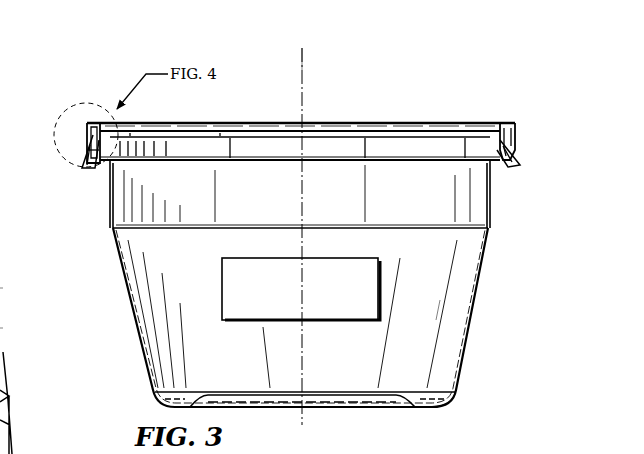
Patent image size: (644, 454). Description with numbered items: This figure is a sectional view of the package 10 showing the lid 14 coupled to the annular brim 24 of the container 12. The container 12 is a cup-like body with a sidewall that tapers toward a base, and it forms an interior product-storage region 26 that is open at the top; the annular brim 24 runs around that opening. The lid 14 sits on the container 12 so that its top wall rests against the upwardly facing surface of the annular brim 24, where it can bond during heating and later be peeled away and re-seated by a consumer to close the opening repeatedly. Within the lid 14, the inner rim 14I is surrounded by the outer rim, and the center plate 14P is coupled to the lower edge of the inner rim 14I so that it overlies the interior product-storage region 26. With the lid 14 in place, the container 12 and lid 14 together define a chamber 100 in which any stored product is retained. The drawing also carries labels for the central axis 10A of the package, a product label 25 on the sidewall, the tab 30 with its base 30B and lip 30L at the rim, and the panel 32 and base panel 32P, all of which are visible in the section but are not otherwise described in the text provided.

The package 10 is at (434, 74).
The central axis 10A is at (303, 62).
The container 12 is at (481, 324).
The lid 14 is at (76, 122).
The inner rim 14I is at (0, 289).
The center plate 14P is at (0, 328).
The annular brim 24 is at (97, 121).
The product label 25 is at (323, 322).
The interior product-storage region 26 is at (366, 186).
The tab 30 is at (533, 147).
The tab base 30B is at (84, 149).
The tab lip 30L is at (92, 168).
The lid panel / base 32 is at (421, 122).
The base panel 32P is at (447, 410).
The chamber 100 is at (412, 339).